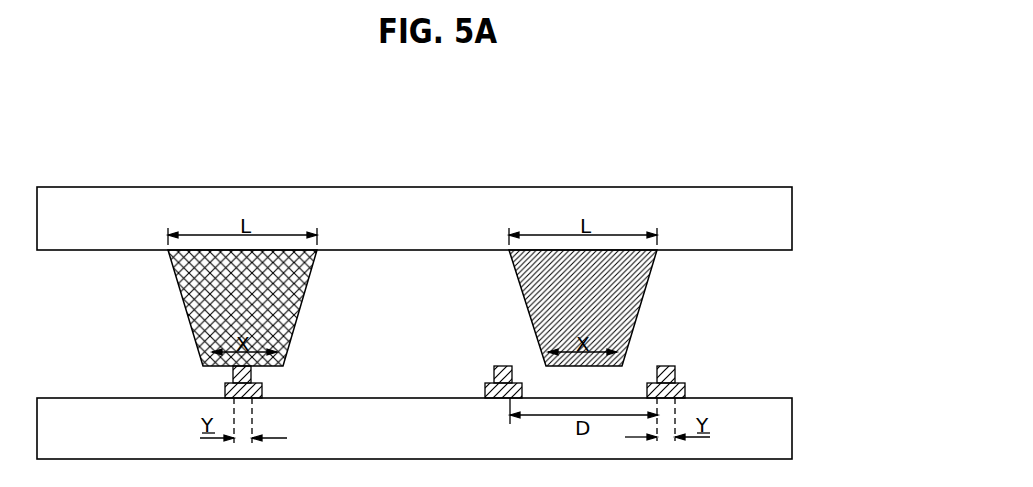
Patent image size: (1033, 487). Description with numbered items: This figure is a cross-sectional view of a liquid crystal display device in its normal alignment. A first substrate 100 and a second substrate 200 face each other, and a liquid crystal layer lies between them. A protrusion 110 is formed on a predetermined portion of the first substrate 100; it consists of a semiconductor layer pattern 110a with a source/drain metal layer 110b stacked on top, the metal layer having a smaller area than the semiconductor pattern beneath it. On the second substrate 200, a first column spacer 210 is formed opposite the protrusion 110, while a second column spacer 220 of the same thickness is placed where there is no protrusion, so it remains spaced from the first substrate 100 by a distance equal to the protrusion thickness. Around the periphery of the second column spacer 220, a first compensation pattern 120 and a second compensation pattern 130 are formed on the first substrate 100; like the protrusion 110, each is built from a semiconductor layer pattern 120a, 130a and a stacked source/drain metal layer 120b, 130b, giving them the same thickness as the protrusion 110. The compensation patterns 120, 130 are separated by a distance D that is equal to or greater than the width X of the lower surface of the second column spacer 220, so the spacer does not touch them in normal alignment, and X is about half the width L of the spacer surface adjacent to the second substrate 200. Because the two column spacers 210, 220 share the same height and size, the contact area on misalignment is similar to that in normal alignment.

The first substrate 100 is at (792, 430).
The second substrate 200 is at (792, 223).
The first column spacer 210 is at (297, 298).
The second column spacer 220 is at (643, 296).
The protrusion 110 is at (168, 377).
The semiconductor layer pattern 110a is at (225, 392).
The source/drain metal layer 110b is at (233, 374).
The first compensation pattern 120 is at (434, 377).
The semiconductor layer pattern 120a is at (485, 392).
The source/drain metal layer 120b is at (494, 374).
The second compensation pattern 130 is at (733, 376).
The semiconductor layer pattern 130a is at (685, 392).
The source/drain metal layer 130b is at (675, 374).